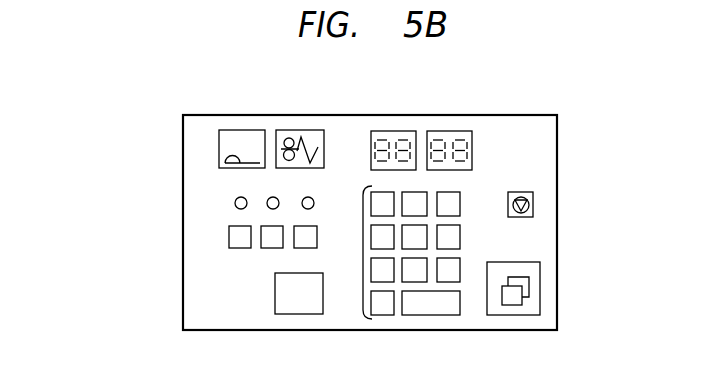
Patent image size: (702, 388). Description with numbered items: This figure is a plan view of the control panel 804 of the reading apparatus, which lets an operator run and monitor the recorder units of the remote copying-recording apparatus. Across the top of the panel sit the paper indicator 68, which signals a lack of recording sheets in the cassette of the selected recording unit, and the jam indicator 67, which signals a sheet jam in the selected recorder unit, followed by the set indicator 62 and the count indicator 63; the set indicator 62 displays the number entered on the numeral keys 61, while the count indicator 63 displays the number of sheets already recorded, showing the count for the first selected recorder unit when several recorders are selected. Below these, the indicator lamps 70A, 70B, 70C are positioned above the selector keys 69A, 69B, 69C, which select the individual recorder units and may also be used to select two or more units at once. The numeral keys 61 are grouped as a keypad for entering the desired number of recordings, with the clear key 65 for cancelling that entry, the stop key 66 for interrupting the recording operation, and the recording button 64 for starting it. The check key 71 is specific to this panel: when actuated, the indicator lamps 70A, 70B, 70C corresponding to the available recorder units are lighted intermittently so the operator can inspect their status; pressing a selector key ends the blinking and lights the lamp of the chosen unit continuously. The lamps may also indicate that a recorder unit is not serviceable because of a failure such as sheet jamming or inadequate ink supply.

The control panel 804 is at (183, 222).
The paper indicator 68 is at (245, 130).
The jam indicator 67 is at (297, 130).
The set indicator 62 is at (396, 131).
The count indicator 63 is at (450, 131).
The indicator lamp 70A is at (235, 190).
The indicator lamp 70B is at (278, 190).
The indicator lamp 70C is at (322, 190).
The selector key 69A is at (243, 249).
The selector key 69B is at (305, 249).
The selector key 69C is at (272, 249).
The check key 71 is at (297, 315).
The numeral keys 61 is at (362, 250).
The clear key 65 is at (430, 315).
The stop key 66 is at (533, 205).
The recording button 64 is at (513, 315).